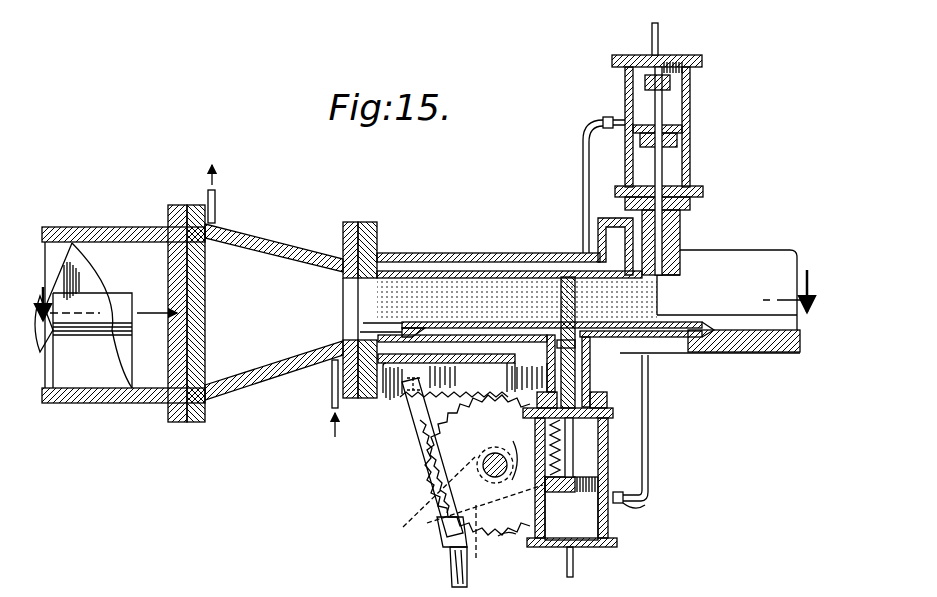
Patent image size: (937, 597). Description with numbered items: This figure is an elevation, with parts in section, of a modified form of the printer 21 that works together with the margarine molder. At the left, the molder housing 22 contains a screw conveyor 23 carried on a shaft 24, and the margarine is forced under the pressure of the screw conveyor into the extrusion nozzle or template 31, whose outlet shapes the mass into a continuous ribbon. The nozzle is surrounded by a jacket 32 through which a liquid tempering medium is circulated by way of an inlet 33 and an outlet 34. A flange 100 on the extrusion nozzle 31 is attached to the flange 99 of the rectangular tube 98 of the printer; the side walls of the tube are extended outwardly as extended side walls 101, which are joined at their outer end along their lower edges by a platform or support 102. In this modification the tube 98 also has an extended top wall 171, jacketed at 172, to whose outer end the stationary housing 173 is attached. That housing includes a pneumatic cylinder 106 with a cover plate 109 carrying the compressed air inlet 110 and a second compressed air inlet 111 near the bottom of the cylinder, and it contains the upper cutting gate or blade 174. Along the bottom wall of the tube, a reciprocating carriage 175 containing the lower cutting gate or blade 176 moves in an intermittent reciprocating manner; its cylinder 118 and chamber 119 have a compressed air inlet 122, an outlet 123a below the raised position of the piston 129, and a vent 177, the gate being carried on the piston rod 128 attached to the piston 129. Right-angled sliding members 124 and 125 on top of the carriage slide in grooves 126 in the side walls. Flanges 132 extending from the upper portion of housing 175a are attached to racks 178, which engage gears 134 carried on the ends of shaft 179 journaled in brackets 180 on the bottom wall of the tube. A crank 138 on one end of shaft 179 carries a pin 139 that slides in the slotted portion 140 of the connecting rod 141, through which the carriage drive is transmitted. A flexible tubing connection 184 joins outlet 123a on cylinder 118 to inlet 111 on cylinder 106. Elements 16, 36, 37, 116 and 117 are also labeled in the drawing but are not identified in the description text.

The flow direction arrows 16 is at (422, 282).
The printer 21 is at (515, 180).
The housing 22 is at (90, 230).
The screw conveyor 23 is at (87, 270).
The shaft 24 is at (122, 300).
The extrusion nozzle 31 is at (276, 234).
The jacket 32 is at (262, 381).
The inlet 33 is at (332, 400).
The outlet 34 is at (215, 197).
The flange 36 is at (173, 208).
The flange 37 is at (190, 238).
The tube 98 is at (417, 251).
The flange 99 is at (368, 222).
The flange 100 is at (352, 222).
The extended side walls 101 is at (748, 260).
The platform 102 is at (752, 352).
The pneumatic cylinder 106 is at (690, 77).
The cover plate 109 is at (688, 55).
The compressed air inlet 110 is at (660, 33).
The second compressed air inlet 111 is at (625, 120).
The spring 116 is at (664, 97).
The piston cap 117 is at (640, 70).
The pneumatic cylinder 118 is at (607, 525).
The chamber 119 is at (605, 450).
The compressed air inlet 122 is at (575, 572).
The outlet 123a is at (623, 503).
The sliding member 124 is at (440, 316).
The sliding member 125 is at (668, 337).
The grooves 126 is at (367, 332).
The piston rod 128 is at (577, 433).
The piston 129 is at (571, 508).
The flanges 132 is at (587, 346).
The gear 134 is at (507, 533).
The crank 138 is at (476, 560).
The pin 139 is at (440, 596).
The slotted portion 140 is at (420, 440).
The connecting rod 141 is at (457, 568).
The extended top wall 171 is at (553, 257).
The jacket 172 is at (502, 268).
The stationary housing 173 is at (666, 140).
The upper cutting gate 174 is at (662, 165).
The reciprocating carriage 175 is at (602, 473).
The housing 175a is at (633, 517).
The cutting gate 176 is at (588, 377).
The vent 177 is at (535, 490).
The racks 178 is at (393, 380).
The shaft 179 is at (493, 453).
The brackets 180 is at (470, 410).
The flexible tubing connection 184 is at (582, 162).